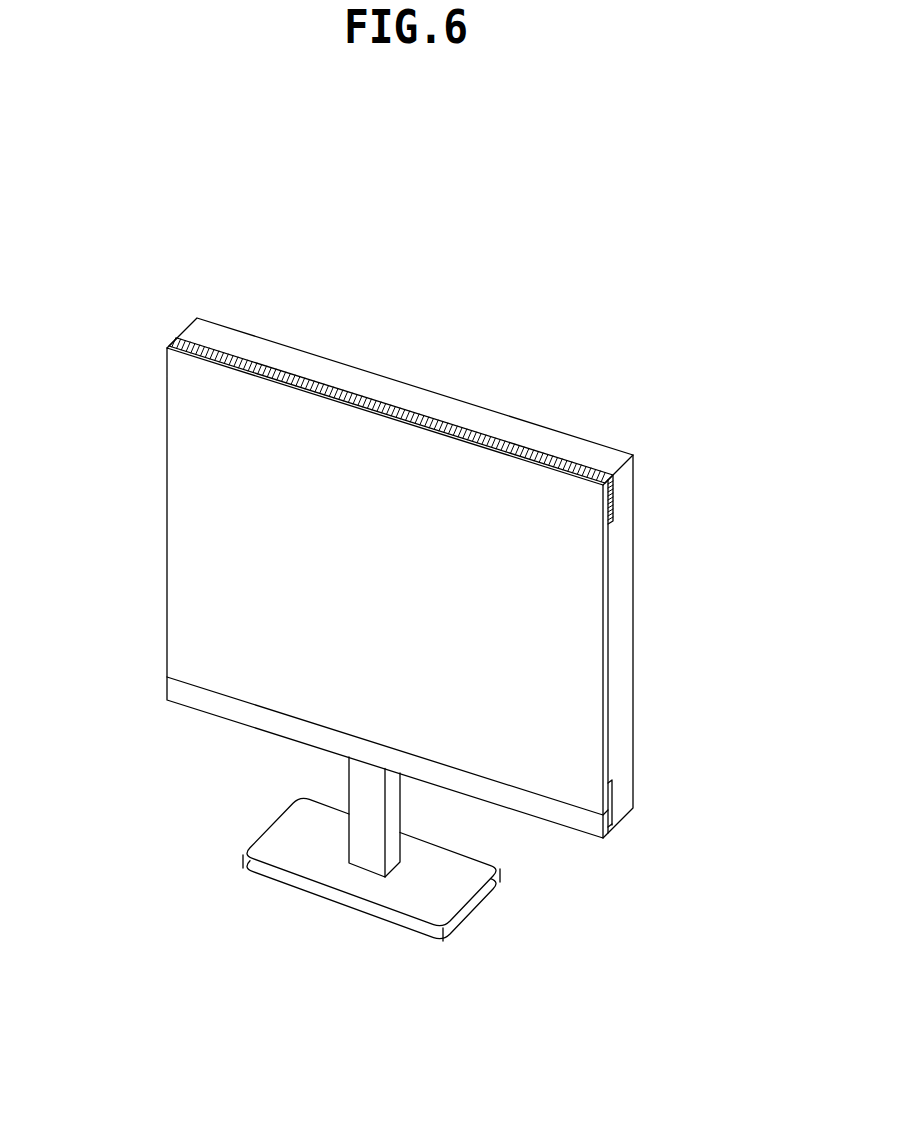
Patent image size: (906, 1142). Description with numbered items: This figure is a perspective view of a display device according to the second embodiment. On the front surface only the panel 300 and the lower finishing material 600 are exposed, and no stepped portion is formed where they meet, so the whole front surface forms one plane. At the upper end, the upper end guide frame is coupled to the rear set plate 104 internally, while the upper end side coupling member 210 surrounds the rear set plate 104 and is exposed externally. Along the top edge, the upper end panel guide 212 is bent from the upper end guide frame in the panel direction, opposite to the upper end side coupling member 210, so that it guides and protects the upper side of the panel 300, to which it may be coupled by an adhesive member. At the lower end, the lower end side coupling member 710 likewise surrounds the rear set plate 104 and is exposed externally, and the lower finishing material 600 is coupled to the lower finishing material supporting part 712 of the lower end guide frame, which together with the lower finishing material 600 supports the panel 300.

The rear set plate 104 is at (634, 582).
The panel 300 is at (192, 430).
The upper end panel guide 212 is at (463, 422).
The upper end side coupling member 210 is at (613, 493).
The lower finishing material 600 is at (562, 813).
The lower end side coupling member 710 is at (612, 787).
The lower finishing material supporting part 712 is at (612, 825).